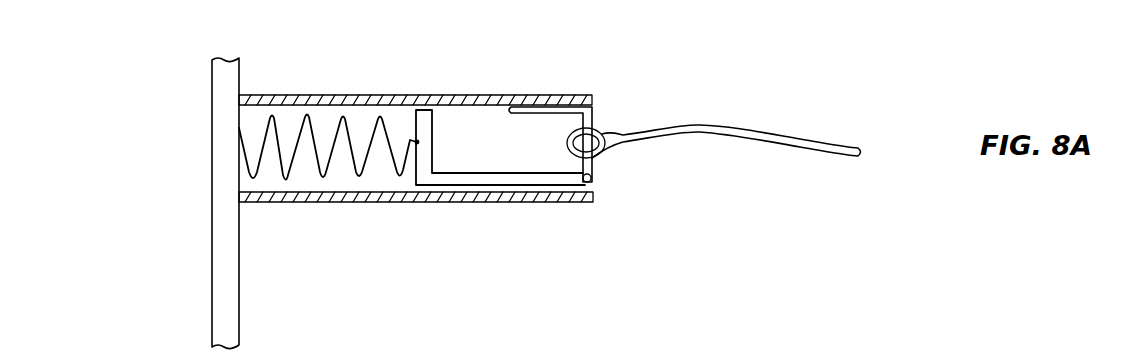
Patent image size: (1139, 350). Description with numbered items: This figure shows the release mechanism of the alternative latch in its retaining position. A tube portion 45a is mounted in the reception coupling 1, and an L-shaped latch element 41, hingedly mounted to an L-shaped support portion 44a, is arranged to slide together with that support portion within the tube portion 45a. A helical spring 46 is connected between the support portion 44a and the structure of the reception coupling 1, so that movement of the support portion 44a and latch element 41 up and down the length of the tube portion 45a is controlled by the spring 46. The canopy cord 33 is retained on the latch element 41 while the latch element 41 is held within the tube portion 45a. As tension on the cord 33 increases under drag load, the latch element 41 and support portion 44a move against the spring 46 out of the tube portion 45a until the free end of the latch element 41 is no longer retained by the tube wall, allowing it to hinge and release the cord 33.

The reception coupling 1 is at (222, 226).
The tube portion 45a is at (300, 95).
The helical spring 46 is at (287, 192).
The L-shaped support portion 44a is at (447, 181).
The L-shaped latch element 41 is at (588, 105).
The canopy cord 33 is at (778, 140).